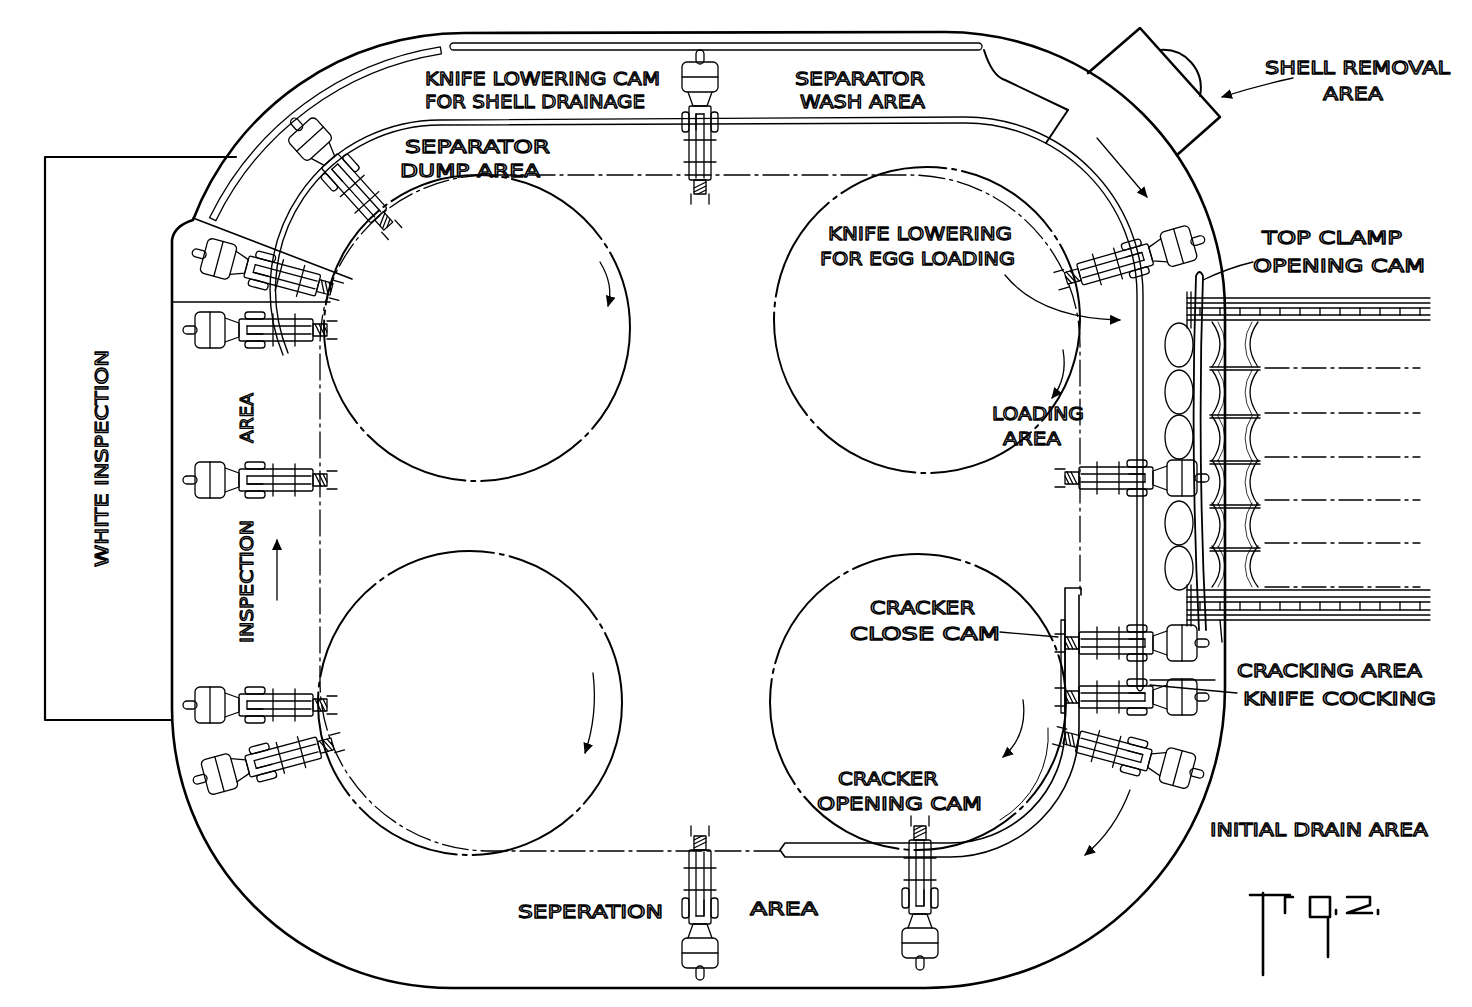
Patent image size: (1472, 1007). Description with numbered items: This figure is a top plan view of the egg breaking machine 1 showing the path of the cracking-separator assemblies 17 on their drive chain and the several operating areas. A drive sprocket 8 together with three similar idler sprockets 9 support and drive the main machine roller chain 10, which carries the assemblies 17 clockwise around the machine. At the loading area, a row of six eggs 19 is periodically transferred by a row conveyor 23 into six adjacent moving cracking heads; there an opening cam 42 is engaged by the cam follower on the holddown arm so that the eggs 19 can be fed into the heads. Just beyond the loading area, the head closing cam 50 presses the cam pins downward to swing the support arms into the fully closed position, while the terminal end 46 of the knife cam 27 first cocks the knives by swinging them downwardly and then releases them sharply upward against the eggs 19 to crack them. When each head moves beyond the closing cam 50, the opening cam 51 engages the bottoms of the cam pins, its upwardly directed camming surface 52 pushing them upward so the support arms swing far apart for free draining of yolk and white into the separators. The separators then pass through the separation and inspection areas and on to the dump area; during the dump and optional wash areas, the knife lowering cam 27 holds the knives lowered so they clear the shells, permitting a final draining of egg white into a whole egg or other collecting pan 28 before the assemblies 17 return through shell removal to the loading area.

The egg breaking machine 1 is at (722, 491).
The drive sprocket 8 is at (780, 628).
The idler sprockets 9 is at (630, 297).
The main machine roller chain 10 is at (645, 851).
The cracking-separator assemblies 17 is at (302, 775).
The eggs 19 is at (1182, 433).
The row conveyor 23 is at (1358, 494).
The knife lowering cam 27 is at (778, 120).
The collecting pan 28 is at (760, 96).
The opening cam 42 is at (1196, 333).
The terminal end of the cam 46 is at (1143, 673).
The head closing cam 50 is at (1058, 662).
The opening cam 51 is at (1012, 795).
The upwardly directed camming surface 52 is at (1005, 831).